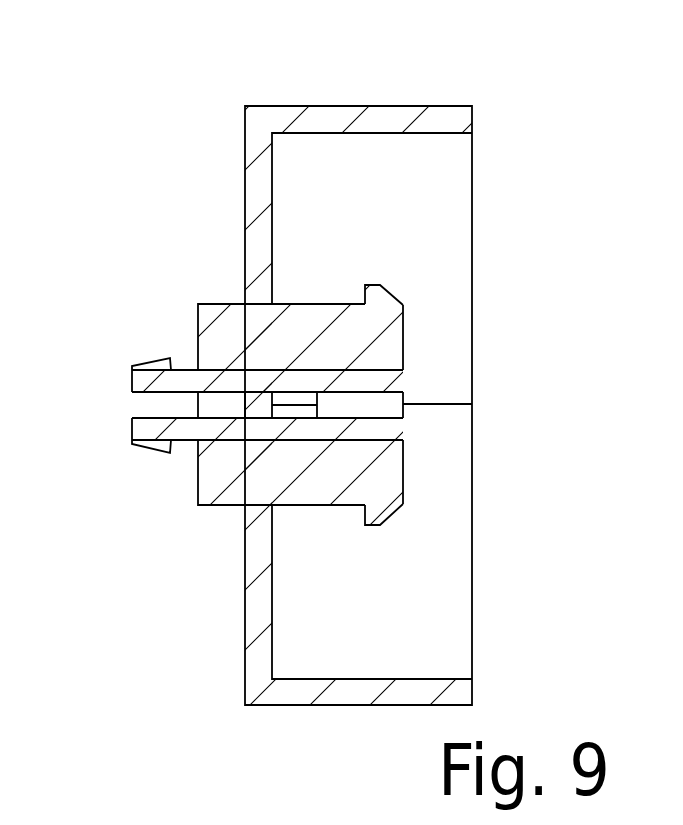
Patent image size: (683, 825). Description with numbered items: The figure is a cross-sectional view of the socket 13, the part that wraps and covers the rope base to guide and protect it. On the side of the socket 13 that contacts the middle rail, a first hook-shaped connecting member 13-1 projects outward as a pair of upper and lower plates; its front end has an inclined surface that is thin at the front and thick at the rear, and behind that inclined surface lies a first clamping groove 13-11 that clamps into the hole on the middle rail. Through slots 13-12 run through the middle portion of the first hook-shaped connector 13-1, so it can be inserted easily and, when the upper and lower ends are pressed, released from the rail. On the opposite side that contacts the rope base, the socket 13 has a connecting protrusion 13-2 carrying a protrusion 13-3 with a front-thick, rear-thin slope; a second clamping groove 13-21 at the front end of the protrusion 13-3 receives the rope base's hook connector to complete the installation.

The socket 13 is at (418, 90).
The first hook-shaped connecting member 13-1 is at (140, 363).
The first clamping groove 13-11 is at (187, 367).
The through slots 13-12 is at (182, 400).
The connecting protrusion 13-2 is at (402, 338).
The second clamping groove 13-21 is at (333, 297).
The protrusion 13-3 is at (388, 293).